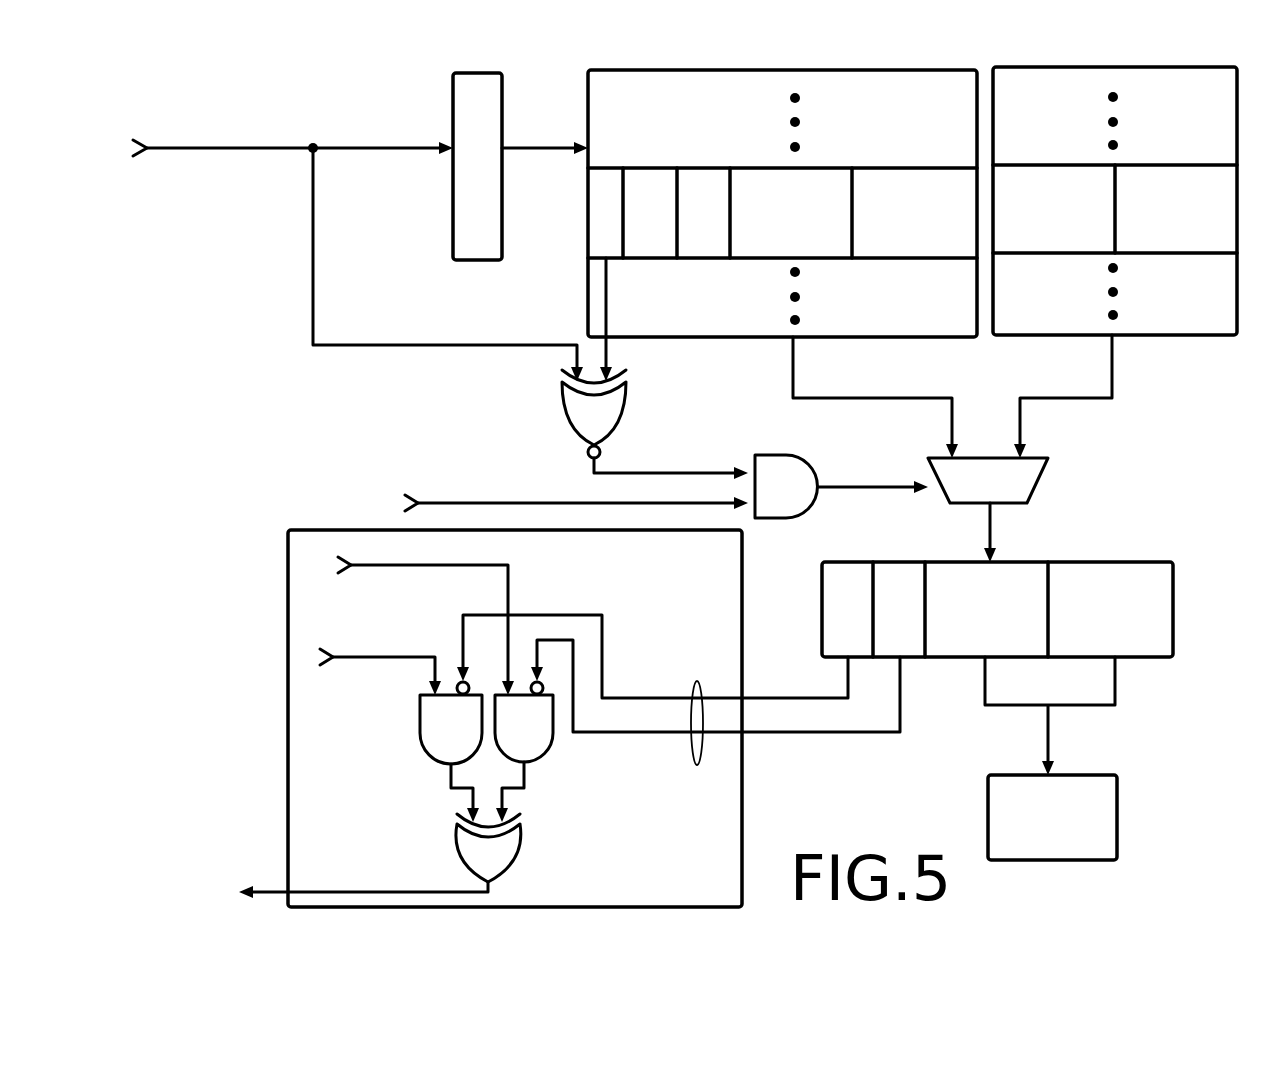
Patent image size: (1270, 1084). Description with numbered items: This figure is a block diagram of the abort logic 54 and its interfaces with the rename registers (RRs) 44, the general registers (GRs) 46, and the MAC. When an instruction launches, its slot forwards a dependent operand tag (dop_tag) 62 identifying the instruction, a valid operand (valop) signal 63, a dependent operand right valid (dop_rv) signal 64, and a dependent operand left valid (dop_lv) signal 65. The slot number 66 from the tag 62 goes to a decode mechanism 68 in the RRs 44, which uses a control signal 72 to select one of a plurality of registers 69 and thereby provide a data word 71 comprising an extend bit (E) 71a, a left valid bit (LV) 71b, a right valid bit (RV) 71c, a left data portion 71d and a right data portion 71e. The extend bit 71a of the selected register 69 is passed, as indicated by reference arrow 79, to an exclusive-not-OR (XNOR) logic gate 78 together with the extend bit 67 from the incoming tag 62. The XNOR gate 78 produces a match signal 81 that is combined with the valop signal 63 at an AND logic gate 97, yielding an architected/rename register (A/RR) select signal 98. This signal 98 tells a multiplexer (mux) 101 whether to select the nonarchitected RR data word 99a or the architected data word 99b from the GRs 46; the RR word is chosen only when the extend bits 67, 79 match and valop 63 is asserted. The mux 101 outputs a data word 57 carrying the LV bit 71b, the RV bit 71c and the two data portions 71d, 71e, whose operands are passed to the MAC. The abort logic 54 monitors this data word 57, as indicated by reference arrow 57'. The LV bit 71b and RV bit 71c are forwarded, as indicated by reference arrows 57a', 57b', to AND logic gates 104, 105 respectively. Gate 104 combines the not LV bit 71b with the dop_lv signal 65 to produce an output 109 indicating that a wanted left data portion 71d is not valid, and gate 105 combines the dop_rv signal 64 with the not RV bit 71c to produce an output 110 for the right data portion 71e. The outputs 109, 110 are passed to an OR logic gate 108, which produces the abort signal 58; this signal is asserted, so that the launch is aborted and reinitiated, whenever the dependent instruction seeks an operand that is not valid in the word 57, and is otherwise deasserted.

The dependent operand tag (dop_tag) 62 is at (210, 156).
The slot number 66 is at (393, 153).
The decode mechanism 68 is at (490, 236).
The control signal 72 is at (541, 146).
The rename registers (RRs) 44 is at (678, 144).
The register 69 is at (840, 168).
The data word 71 is at (572, 240).
The extend bit (E) 71a is at (612, 259).
The left valid bit (LV) 71b is at (662, 259).
The right valid bit (RV) 71c is at (713, 259).
The left data portion 71d is at (813, 259).
The right data portion 71e is at (916, 259).
The general registers (GRs) 46 is at (1066, 139).
The extend bit from incoming tag 67 is at (366, 348).
The extend bit from selected register 79 is at (612, 352).
The exclusive-not-OR (XNOR) logic gate 78 is at (562, 418).
The match signal 81 is at (660, 472).
The valid operand (valop) signal 63 is at (530, 502).
The AND logic gate 97 is at (755, 458).
The architected/rename register (A/RR) select signal 98 is at (826, 476).
The nonarchitected RR data word 99a is at (793, 378).
The architected data word 99b is at (1112, 378).
The multiplexer (mux) 101 is at (1048, 470).
The data word 57 is at (997, 573).
The abort logic 54 is at (284, 530).
The dependent operand right valid (dop_rv) signal 64 is at (406, 571).
The dependent operand left valid (dop_lv) signal 65 is at (366, 669).
The AND logic gate 104 is at (420, 741).
The AND logic gate 105 is at (540, 757).
The output 109 is at (458, 786).
The output 110 is at (533, 795).
The OR logic gate 108 is at (515, 857).
The abort signal 58 is at (442, 892).
The LV bit path 57a' is at (652, 625).
The RV bit path 57b' is at (715, 682).
The monitoring path 57' is at (673, 747).